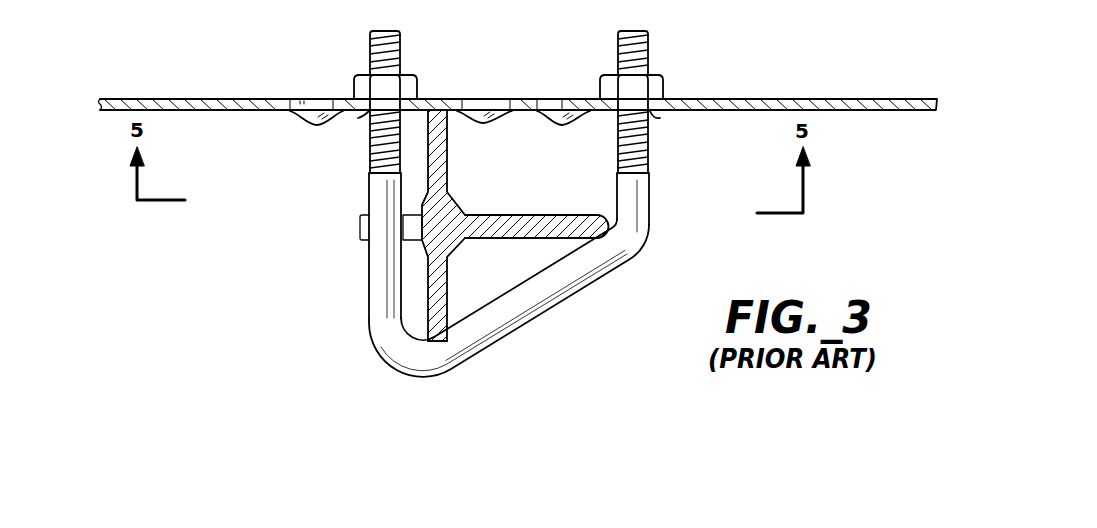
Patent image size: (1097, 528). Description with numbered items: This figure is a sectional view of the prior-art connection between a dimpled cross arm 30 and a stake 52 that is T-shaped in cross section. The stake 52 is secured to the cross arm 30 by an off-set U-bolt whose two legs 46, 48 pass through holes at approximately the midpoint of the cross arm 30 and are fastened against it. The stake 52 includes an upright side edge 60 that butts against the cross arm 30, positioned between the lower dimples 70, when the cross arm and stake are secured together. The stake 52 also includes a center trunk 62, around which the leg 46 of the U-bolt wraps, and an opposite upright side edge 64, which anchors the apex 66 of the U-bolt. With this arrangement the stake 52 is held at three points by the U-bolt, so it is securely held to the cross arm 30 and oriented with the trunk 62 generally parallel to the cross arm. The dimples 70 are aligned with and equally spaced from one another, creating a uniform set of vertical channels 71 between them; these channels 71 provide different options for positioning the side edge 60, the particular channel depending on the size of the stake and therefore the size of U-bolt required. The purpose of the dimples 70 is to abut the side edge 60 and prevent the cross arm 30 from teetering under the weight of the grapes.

The dimpled cross arm 30 is at (222, 99).
The leg of U-bolt 46 is at (377, 285).
The leg of U-bolt 48 is at (632, 188).
The stake 52 is at (497, 213).
The upright side edge 60 is at (446, 132).
The center trunk 62 is at (478, 238).
The opposite upright side edge 64 is at (447, 325).
The apex of bolt 66 is at (415, 352).
The lower dimples 70 is at (310, 122).
The vertical channels 71 is at (357, 112).